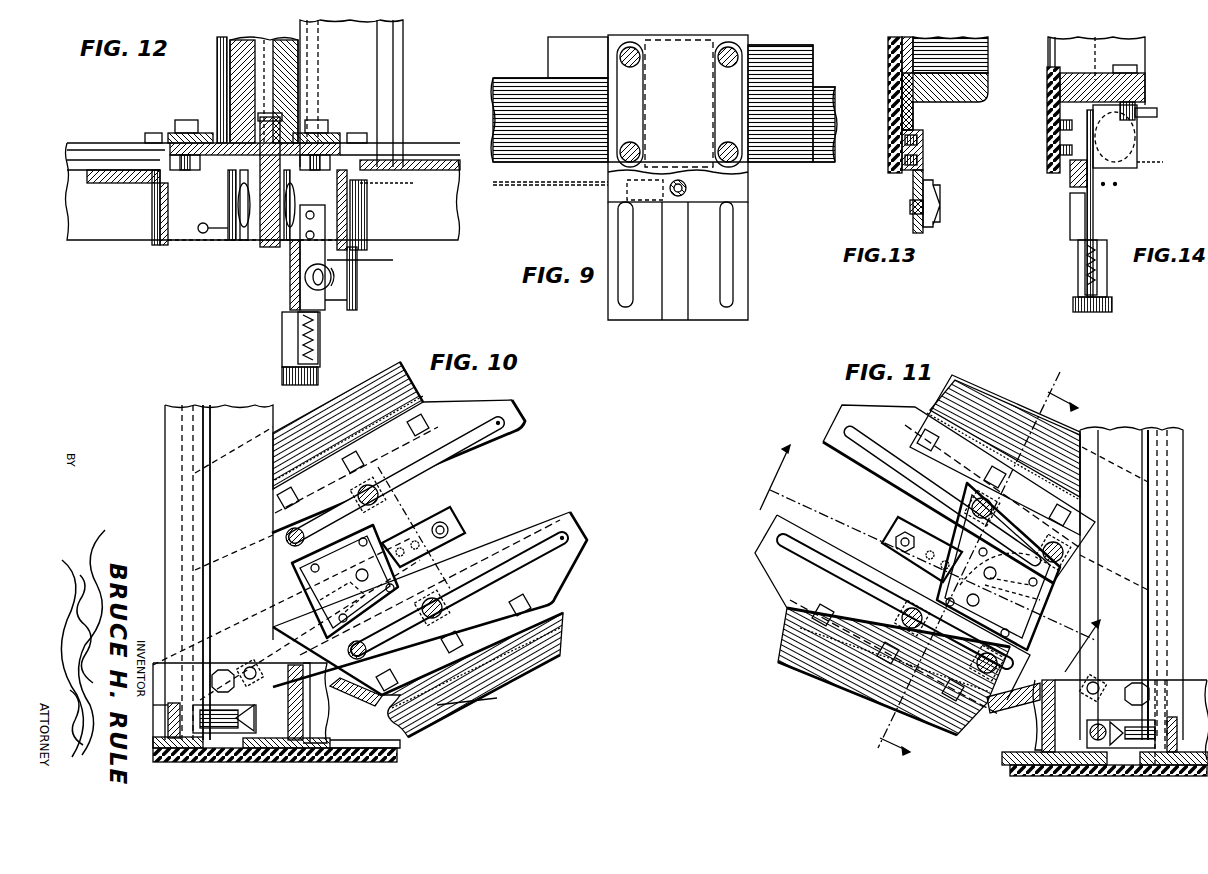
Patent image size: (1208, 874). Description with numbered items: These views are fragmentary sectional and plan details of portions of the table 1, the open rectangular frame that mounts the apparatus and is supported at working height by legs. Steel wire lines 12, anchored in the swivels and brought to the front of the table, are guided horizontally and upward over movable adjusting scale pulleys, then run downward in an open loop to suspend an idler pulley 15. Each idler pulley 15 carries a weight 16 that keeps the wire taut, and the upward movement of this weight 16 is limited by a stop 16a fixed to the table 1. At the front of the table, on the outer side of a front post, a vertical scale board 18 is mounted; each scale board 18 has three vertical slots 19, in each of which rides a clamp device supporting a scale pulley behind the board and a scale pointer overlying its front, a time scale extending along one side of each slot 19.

In FIG. 12, the table 1 is at (88, 228).
In FIG. 9, the table 1 is at (798, 150).
In FIG. 13, the table 1 is at (888, 110).
In FIG. 14, the table 1 is at (1047, 143).
In FIG. 10, the table 1 is at (228, 447).
In FIG. 11, the table 1 is at (1118, 440).
In FIG. 12, the steel wire line 12 is at (265, 75).
In FIG. 9, the steel wire line 12 is at (548, 188).
In FIG. 14, the steel wire line 12 is at (1080, 245).
In FIG. 10, the steel wire line 12 is at (290, 622).
In FIG. 11, the steel wire line 12 is at (1108, 645).
In FIG. 12, the idler pulley 15 is at (300, 336).
In FIG. 14, the idler pulley 15 is at (1090, 265).
In FIG. 10, the idler pulley 15 is at (215, 735).
In FIG. 11, the idler pulley 15 is at (1087, 786).
In FIG. 12, the weight 16 is at (282, 376).
In FIG. 14, the weight 16 is at (1073, 308).
In FIG. 10, the weight 16 is at (205, 708).
In FIG. 11, the weight 16 is at (1131, 719).
In FIG. 12, the stop 16a is at (333, 312).
In FIG. 14, the stop 16a is at (1070, 215).
In FIG. 10, the stop 16a is at (285, 745).
In FIG. 11, the stop 16a is at (1135, 748).
In FIG. 12, the scale board 18 is at (396, 80).
In FIG. 13, the scale board 18 is at (888, 57).
In FIG. 14, the scale board 18 is at (1047, 110).
In FIG. 10, the scale board 18 is at (176, 762).
In FIG. 11, the scale board 18 is at (1046, 776).
In FIG. 14, the vertical slot 19 is at (1050, 48).
In FIG. 10, the vertical slot 19 is at (245, 752).
In FIG. 11, the vertical slot 19 is at (1160, 775).